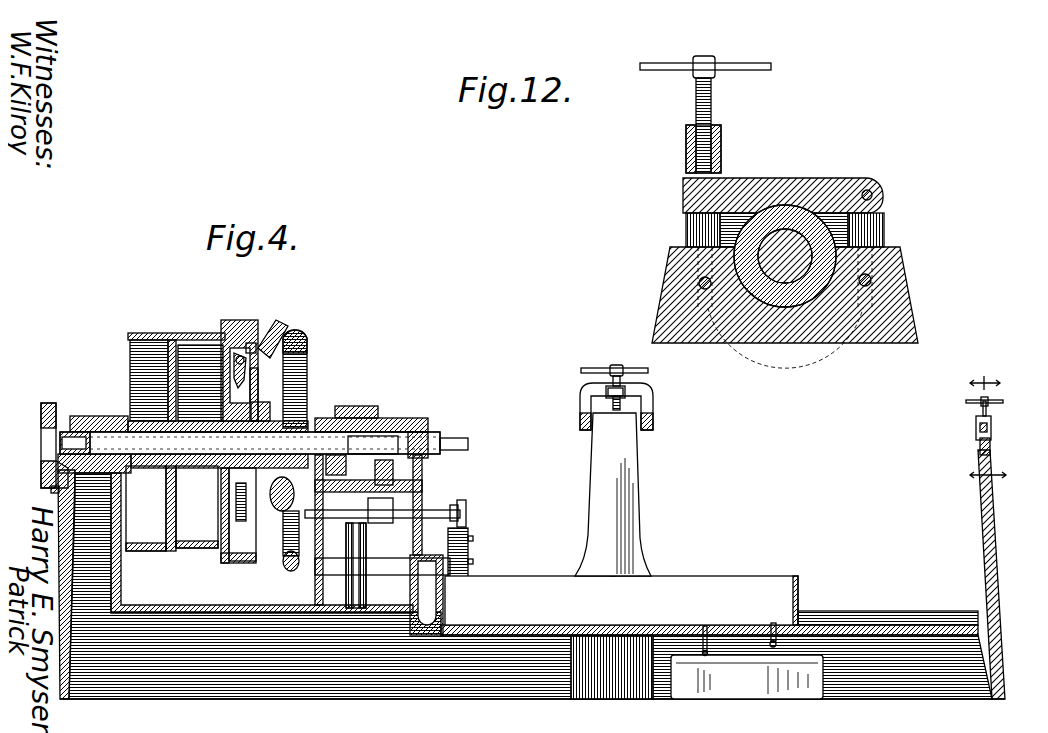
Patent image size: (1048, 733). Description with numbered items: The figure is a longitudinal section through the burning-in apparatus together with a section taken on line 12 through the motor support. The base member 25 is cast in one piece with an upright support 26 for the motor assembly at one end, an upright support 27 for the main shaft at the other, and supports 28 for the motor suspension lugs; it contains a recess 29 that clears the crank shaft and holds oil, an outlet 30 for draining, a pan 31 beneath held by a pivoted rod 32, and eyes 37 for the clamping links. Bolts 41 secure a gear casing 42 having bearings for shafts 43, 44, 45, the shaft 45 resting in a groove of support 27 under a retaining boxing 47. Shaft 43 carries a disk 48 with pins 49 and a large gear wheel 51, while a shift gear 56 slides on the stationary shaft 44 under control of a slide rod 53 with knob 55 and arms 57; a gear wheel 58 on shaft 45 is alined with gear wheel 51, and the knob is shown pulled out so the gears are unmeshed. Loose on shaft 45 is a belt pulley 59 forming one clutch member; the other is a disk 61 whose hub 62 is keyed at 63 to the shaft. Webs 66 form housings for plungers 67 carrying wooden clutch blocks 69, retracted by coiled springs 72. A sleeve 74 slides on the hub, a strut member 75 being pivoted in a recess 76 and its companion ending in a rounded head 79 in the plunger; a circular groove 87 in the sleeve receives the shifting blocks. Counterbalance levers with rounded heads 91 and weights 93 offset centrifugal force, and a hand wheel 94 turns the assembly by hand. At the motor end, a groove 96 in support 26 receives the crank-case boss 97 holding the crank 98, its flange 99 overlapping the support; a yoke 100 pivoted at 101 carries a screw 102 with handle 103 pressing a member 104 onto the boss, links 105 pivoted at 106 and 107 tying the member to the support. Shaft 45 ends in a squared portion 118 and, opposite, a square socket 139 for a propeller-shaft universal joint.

In FIG. 4, the section line 12 is at (975, 422).
In FIG. 4, the base member 25 is at (872, 640).
In FIG. 4, the upright support 26 is at (970, 552).
In FIG. 4, the upright support 27 is at (112, 590).
In FIG. 4, the support 28 is at (624, 516).
In FIG. 4, the recess 29 is at (698, 572).
In FIG. 4, the outlet 30 is at (766, 640).
In FIG. 4, the pan 31 is at (750, 690).
In FIG. 4, the rod 32 is at (697, 618).
In FIG. 4, the eye 37 is at (602, 568).
In FIG. 4, the bolt 41 is at (42, 448).
In FIG. 4, the gear casing 42 is at (400, 410).
In FIG. 4, the shaft 43 is at (372, 560).
In FIG. 4, the stationary shaft 44 is at (408, 480).
In FIG. 4, the shaft 45 is at (412, 422).
In FIG. 4, the retaining boxing 47 is at (80, 412).
In FIG. 4, the disk 48 is at (462, 533).
In FIG. 4, the pin 49 is at (462, 558).
In FIG. 4, the gear wheel 51 is at (347, 600).
In FIG. 4, the slide rod 53 is at (410, 503).
In FIG. 4, the knob 55 is at (458, 508).
In FIG. 4, the shift gear 56 is at (373, 442).
In FIG. 4, the arm 57 is at (359, 470).
In FIG. 4, the gear wheel 58 is at (350, 398).
In FIG. 4, the belt pulley 59 is at (176, 368).
In FIG. 4, the disk 61 is at (200, 393).
In FIG. 4, the hub 62 is at (250, 443).
In FIG. 4, the key 63 is at (270, 505).
In FIG. 4, the web 66 is at (267, 335).
In FIG. 4, the plunger 67 is at (232, 345).
In FIG. 4, the wooden clutch block 69 is at (236, 349).
In FIG. 4, the coiled spring 72 is at (200, 378).
In FIG. 4, the sleeve 74 is at (268, 406).
In FIG. 4, the strut member 75 is at (250, 395).
In FIG. 4, the recess 76 is at (215, 402).
In FIG. 4, the rounded head 79 is at (258, 335).
In FIG. 4, the circular groove 87 is at (265, 443).
In FIG. 4, the rounded head 91 is at (224, 345).
In FIG. 4, the weight 93 is at (182, 334).
In FIG. 4, the hand wheel 94 is at (286, 325).
In FIG. 4, the groove 96 is at (972, 440).
In FIG. 12, the groove 96 is at (790, 335).
In FIG. 12, the boss 97 is at (678, 222).
In FIG. 12, the crank 98 is at (780, 232).
In FIG. 12, the flange 99 is at (876, 222).
In FIG. 4, the yoke 100 is at (968, 414).
In FIG. 12, the yoke 100 is at (713, 125).
In FIG. 12, the pivot 101 is at (690, 276).
In FIG. 4, the screw 102 is at (979, 400).
In FIG. 12, the screw 102 is at (703, 95).
In FIG. 4, the handle 103 is at (982, 392).
In FIG. 12, the handle 103 is at (733, 55).
In FIG. 4, the member 104 is at (983, 425).
In FIG. 12, the member 104 is at (740, 164).
In FIG. 12, the link 105 is at (877, 197).
In FIG. 12, the pivot 106 is at (858, 182).
In FIG. 12, the pivot 107 is at (864, 272).
In FIG. 4, the squared portion 118 is at (455, 432).
In FIG. 4, the square socket 139 is at (42, 410).